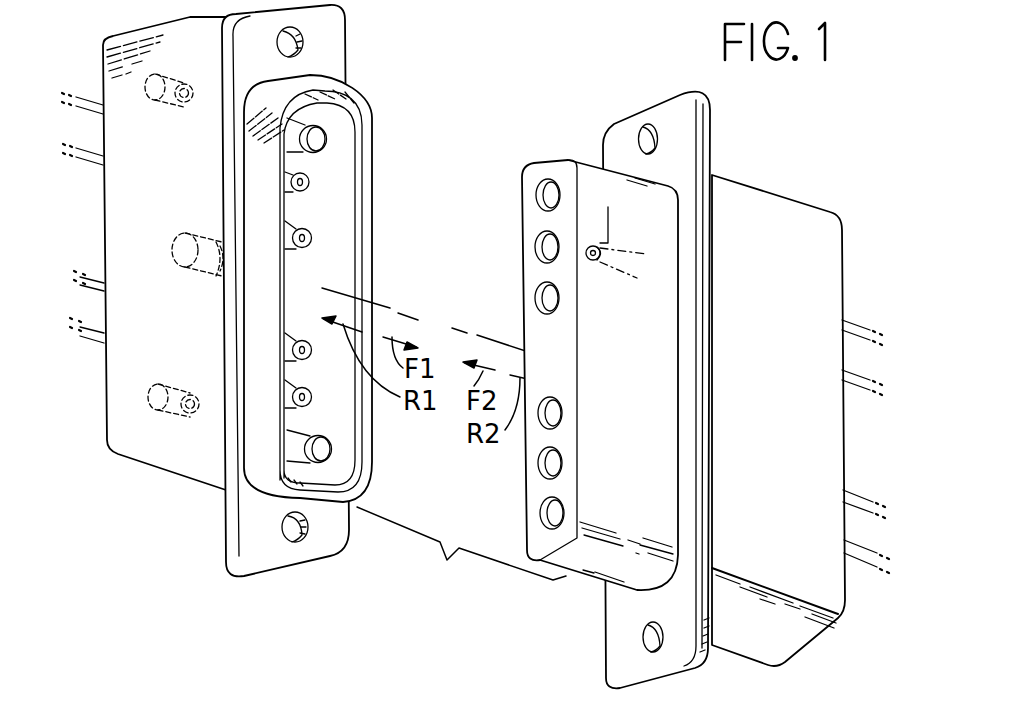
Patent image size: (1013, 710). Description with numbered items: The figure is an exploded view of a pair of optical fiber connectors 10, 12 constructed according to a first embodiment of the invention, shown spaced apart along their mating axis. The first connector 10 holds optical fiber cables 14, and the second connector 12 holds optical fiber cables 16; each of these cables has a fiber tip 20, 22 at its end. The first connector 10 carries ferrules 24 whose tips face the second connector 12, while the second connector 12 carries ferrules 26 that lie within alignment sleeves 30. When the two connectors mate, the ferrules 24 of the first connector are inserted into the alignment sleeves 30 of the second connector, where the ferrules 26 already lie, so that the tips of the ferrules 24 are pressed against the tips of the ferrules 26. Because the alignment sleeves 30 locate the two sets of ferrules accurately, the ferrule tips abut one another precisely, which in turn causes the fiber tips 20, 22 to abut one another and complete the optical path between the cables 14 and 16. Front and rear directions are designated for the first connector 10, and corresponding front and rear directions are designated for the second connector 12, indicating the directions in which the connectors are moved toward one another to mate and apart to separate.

The first optical fiber connector 10 is at (326, 291).
The second optical fiber connector 12 is at (583, 360).
The optical fiber cables 14 is at (100, 108).
The optical fiber cables 16 is at (845, 321).
The fiber tip 20 is at (308, 184).
The fiber tip 22 is at (586, 256).
The ferrules 24 is at (289, 172).
The ferrules 26 is at (608, 207).
The alignment sleeves 30 is at (550, 252).